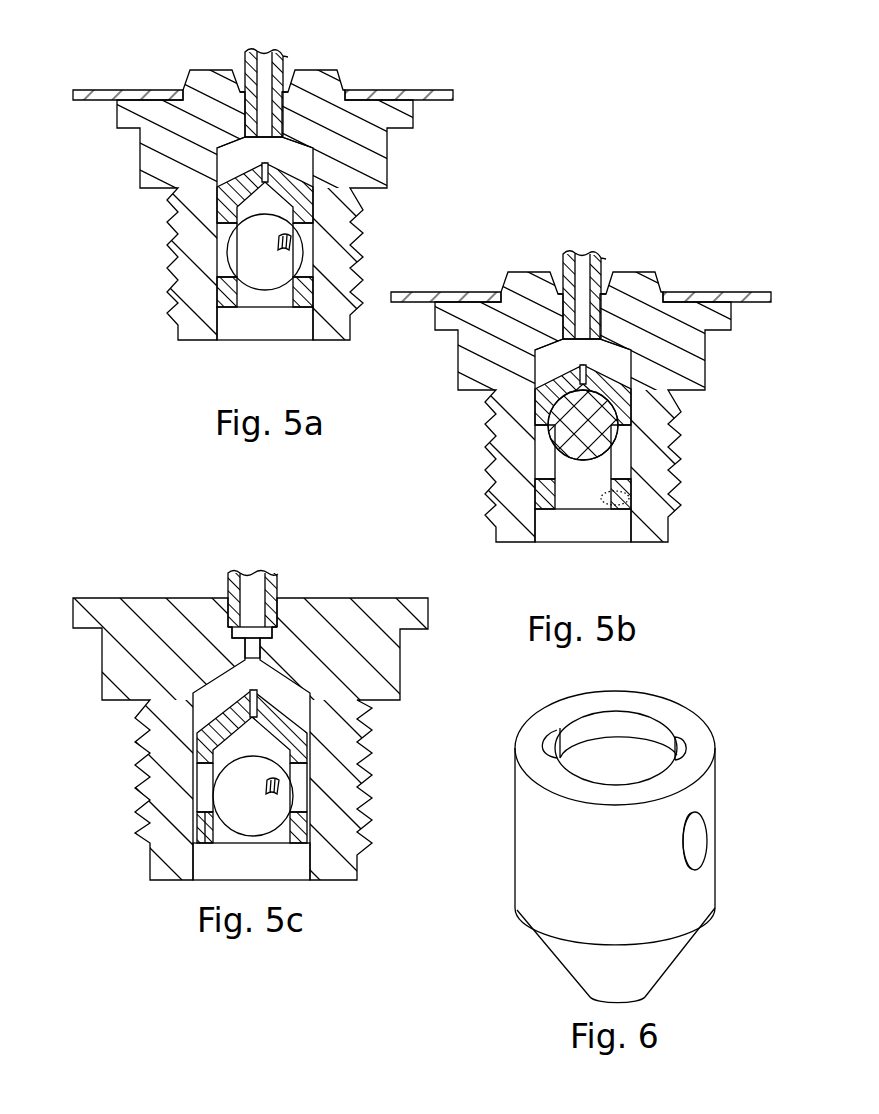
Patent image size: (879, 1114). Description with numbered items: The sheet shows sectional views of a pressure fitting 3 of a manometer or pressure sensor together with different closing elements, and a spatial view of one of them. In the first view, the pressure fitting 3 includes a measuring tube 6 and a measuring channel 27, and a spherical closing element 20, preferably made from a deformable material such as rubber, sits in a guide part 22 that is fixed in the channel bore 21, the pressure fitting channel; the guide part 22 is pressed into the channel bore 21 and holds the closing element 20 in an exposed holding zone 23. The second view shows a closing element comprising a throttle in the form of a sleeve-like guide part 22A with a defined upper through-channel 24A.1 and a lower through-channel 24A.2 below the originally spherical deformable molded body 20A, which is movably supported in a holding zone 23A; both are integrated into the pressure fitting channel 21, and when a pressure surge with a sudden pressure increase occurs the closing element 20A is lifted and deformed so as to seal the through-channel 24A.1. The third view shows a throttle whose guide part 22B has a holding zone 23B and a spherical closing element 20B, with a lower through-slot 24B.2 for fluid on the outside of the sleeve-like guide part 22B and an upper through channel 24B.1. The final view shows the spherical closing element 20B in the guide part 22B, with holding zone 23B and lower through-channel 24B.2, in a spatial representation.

In FIG. 5A, the pressure fitting 3 is at (200, 348).
In FIG. 5B, the pressure fitting 3 is at (683, 537).
In FIG. 5C, the pressure fitting 3 is at (145, 854).
In FIG. 5A, the measuring tube 6 is at (255, 52).
In FIG. 5B, the measuring tube 6 is at (571, 254).
In FIG. 5C, the measuring tube 6 is at (228, 590).
In FIG. 5A, the measuring channel 27 is at (245, 122).
In FIG. 5B, the measuring channel 27 is at (563, 322).
In FIG. 5C, the measuring channel 27 is at (245, 648).
In FIG. 5A, the guide part 22 is at (237, 193).
In FIG. 5A, the holding zone 23 is at (227, 233).
In FIG. 5A, the spherical closing element 20 is at (243, 257).
In FIG. 5A, the channel bore 21 is at (250, 327).
In FIG. 5B, the channel bore 21 is at (600, 528).
In FIG. 5C, the channel bore 21 is at (301, 864).
In FIG. 5B, the sleeve-like guide part 22A is at (627, 405).
In FIG. 5B, the holding zone 23A is at (545, 455).
In FIG. 5B, the deformable molded body 20A is at (603, 442).
In FIG. 5B, the upper through-channel 24A.1 is at (594, 350).
In FIG. 5B, the lower through-channel 24A.2 is at (629, 500).
In FIG. 5C, the guide part 22B is at (225, 718).
In FIG. 6, the guide part 22B is at (670, 895).
In FIG. 5C, the holding zone 23B is at (302, 777).
In FIG. 6, the holding zone 23B is at (703, 842).
In FIG. 5C, the spherical closing element 20B is at (272, 811).
In FIG. 6, the spherical closing element 20B is at (612, 757).
In FIG. 5C, the upper through channel 24B.1 is at (254, 682).
In FIG. 5C, the lower through-slot/channel 24B.2 is at (200, 828).
In FIG. 6, the lower through-slot/channel 24B.2 is at (547, 735).